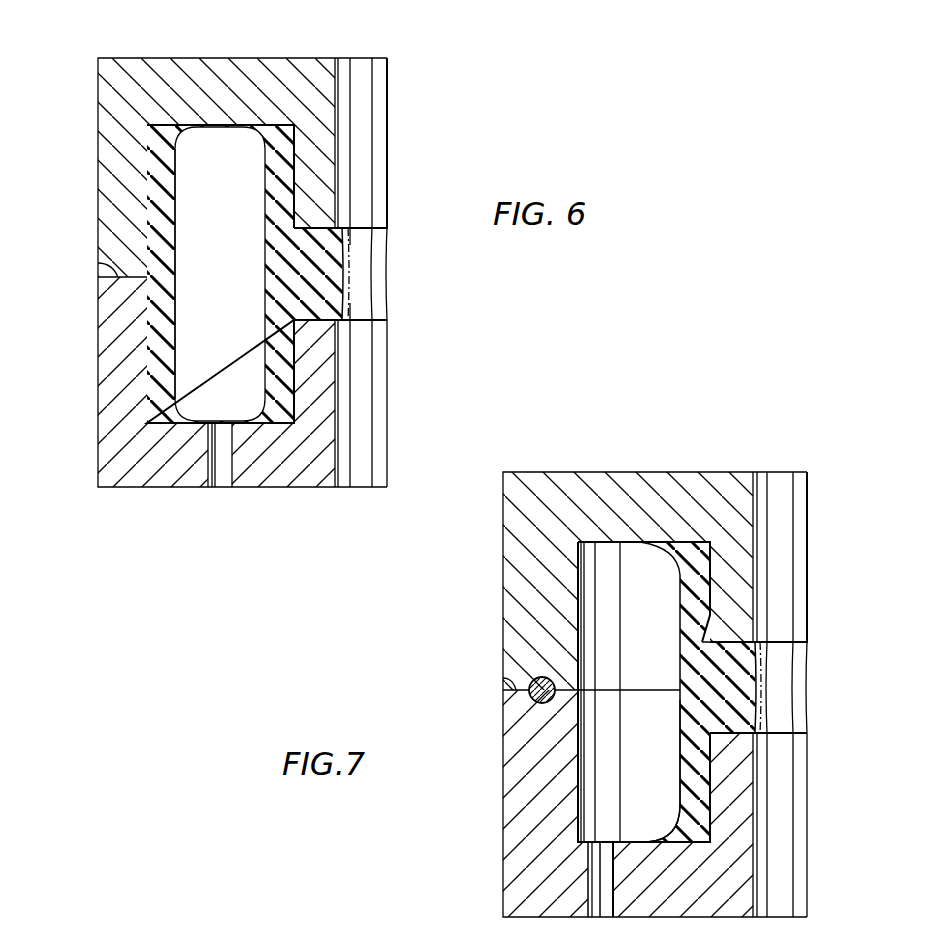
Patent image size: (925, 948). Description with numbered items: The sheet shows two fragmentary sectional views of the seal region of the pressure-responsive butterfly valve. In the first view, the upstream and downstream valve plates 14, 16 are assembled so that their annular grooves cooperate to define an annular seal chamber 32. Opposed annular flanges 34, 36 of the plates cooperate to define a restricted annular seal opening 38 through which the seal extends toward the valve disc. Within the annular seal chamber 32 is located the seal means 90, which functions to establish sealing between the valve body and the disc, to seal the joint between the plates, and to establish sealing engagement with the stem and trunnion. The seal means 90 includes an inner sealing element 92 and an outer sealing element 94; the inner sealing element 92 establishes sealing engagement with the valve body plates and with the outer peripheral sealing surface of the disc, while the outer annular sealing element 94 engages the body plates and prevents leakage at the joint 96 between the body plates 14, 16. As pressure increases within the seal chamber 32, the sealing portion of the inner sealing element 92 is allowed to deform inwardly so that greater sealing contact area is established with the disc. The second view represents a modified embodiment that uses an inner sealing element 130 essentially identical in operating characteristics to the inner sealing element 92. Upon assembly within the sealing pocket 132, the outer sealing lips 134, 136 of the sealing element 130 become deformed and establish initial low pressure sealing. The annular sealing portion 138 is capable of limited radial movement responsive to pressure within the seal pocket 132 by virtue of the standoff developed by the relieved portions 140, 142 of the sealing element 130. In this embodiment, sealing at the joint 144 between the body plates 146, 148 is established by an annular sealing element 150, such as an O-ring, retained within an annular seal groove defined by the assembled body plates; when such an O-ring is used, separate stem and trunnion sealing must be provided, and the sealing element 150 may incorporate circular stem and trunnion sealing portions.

In FIG. 6, the upstream valve plate 14 is at (277, 477).
In FIG. 6, the downstream valve plate 16 is at (231, 68).
In FIG. 6, the annular seal chamber 32 is at (230, 296).
In FIG. 6, the annular flange 34 is at (318, 383).
In FIG. 6, the annular flange 36 is at (320, 170).
In FIG. 6, the annular seal opening 38 is at (322, 323).
In FIG. 6, the seal means 90 is at (357, 268).
In FIG. 6, the inner sealing element 92 is at (265, 222).
In FIG. 6, the outer sealing element 94 is at (178, 182).
In FIG. 6, the joint 96 is at (123, 277).
In FIG. 7, the inner sealing element 130 is at (683, 753).
In FIG. 7, the sealing pocket 132 is at (610, 550).
In FIG. 7, the outer sealing lip 134 is at (662, 548).
In FIG. 7, the outer sealing lip 136 is at (667, 834).
In FIG. 7, the annular sealing portion 138 is at (738, 687).
In FIG. 7, the relieved portion 140 is at (712, 738).
In FIG. 7, the relieved portion 142 is at (712, 630).
In FIG. 7, the joint 144 is at (513, 688).
In FIG. 7, the body plate 146 is at (510, 555).
In FIG. 7, the body plate 148 is at (510, 787).
In FIG. 7, the annular sealing element 150 is at (528, 700).